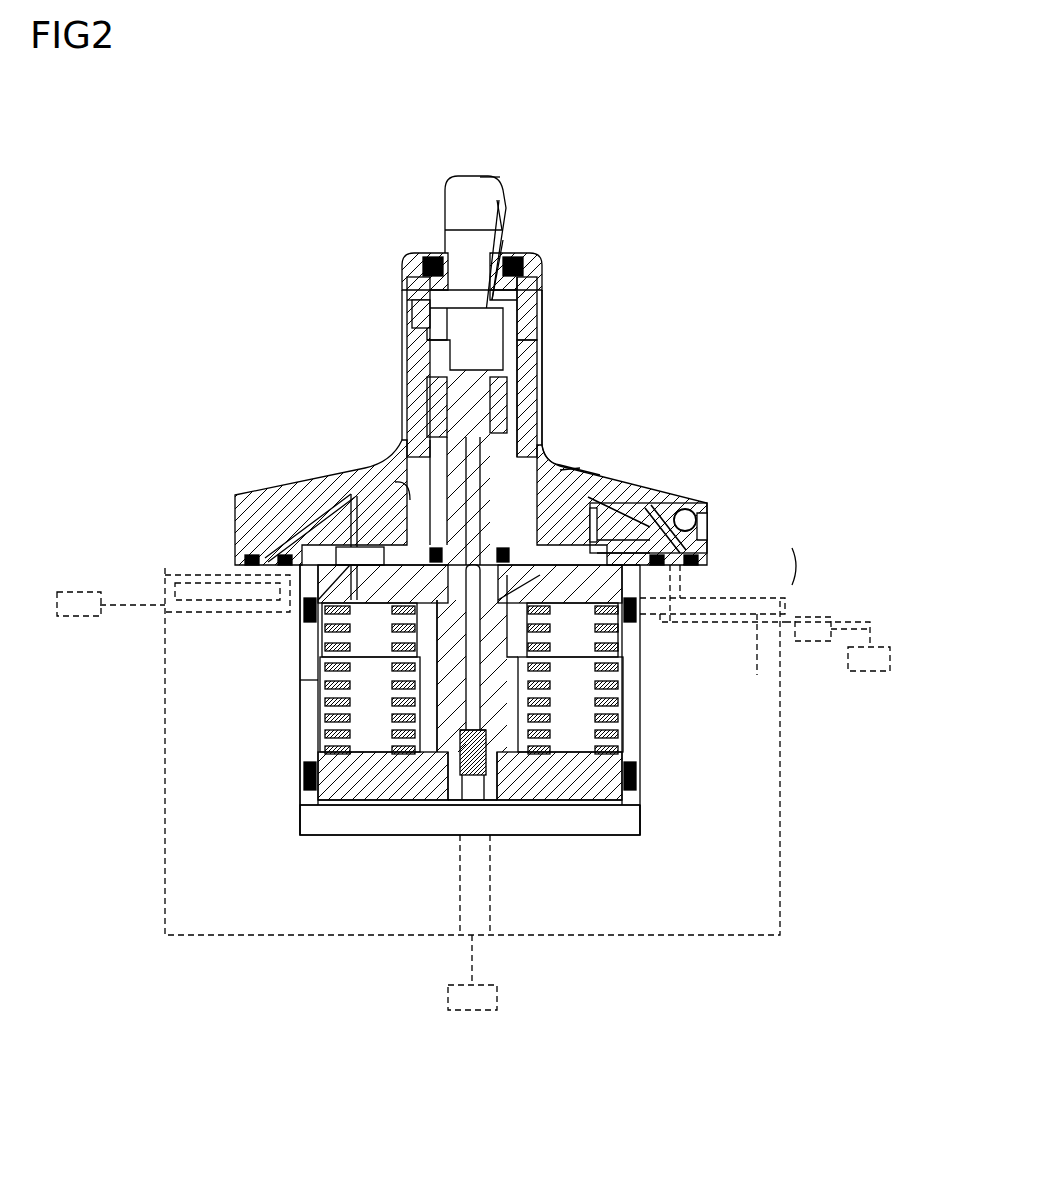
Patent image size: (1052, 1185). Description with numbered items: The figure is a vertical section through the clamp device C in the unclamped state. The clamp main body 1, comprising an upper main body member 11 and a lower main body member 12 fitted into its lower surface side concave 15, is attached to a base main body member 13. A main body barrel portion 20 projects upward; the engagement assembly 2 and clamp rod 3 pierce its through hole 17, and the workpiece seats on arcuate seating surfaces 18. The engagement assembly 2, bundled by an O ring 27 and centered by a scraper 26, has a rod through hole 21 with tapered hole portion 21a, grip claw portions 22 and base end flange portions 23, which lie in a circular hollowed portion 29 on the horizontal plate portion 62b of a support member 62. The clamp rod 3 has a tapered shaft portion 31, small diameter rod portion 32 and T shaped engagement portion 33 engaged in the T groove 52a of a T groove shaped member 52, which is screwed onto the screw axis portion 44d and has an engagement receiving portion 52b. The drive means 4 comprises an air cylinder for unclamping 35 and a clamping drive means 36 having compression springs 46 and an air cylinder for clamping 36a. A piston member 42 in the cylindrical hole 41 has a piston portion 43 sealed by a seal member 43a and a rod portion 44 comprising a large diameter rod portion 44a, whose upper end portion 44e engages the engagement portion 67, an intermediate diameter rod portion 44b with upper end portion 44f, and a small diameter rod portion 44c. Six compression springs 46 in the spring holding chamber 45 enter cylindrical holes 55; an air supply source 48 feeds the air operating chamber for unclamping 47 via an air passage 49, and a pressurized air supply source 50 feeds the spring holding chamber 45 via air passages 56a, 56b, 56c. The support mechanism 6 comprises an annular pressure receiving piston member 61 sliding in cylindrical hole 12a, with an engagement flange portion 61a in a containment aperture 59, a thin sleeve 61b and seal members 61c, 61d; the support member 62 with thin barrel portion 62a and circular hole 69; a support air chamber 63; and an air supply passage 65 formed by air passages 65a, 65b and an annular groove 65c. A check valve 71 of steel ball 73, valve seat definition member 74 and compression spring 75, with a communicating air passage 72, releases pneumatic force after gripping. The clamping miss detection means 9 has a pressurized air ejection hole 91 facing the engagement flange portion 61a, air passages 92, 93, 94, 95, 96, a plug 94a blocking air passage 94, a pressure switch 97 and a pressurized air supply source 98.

The clamp main body 1 is at (802, 566).
The engagement assembly 2 is at (520, 212).
The clamp rod 3 is at (492, 178).
The drive means 4 is at (325, 840).
The support mechanism 6 is at (316, 650).
The clamping miss detection means 9 is at (660, 502).
The upper main body member 11 is at (712, 556).
The lower main body member 12 is at (700, 592).
The cylindrical hole 12a is at (665, 602).
The base main body member 13 is at (782, 775).
The lower surface side concave 15 is at (265, 516).
The through hole 17 is at (545, 284).
The arcuate seating surfaces 18 is at (548, 258).
The main body barrel portion 20 is at (545, 386).
The rod through hole 21 is at (525, 268).
The tapered hole portion 21a is at (508, 195).
The grip claw portions 22 is at (505, 243).
The base end flange portions 23 is at (535, 306).
The scraper 26 is at (440, 250).
The O ring 27 is at (425, 258).
The circular hollowed portion 29 is at (413, 282).
The tapered shaft portion 31 is at (444, 186).
The small diameter rod portion 32 is at (473, 275).
The T shaped engagement portion 33 is at (465, 339).
The air cylinder for unclamping 35 is at (645, 826).
The clamping drive means 36 is at (280, 758).
The air cylinder for clamping 36a is at (310, 687).
The cylindrical hole 41 is at (626, 724).
The piston member 42 is at (310, 826).
The piston portion 43 is at (315, 800).
The seal member 43a is at (640, 782).
The rod portion 44 is at (624, 664).
The large diameter rod portion 44a is at (622, 746).
The intermediate diameter rod portion 44b is at (612, 646).
The small diameter rod portion 44c is at (548, 463).
The screw axis portion 44d is at (510, 432).
The upper end portion 44e is at (606, 700).
The upper end portion 44f is at (556, 600).
The spring holding chamber 45 is at (310, 732).
The compression springs 46 is at (320, 712).
The air operating chamber for unclamping 47 is at (392, 836).
The air supply source 48 is at (498, 998).
The air passage 49 is at (492, 882).
The pressurized air supply source 50 is at (76, 616).
The T groove shaped member 52 is at (537, 406).
The T groove 52a is at (542, 346).
The engagement receiving portion 52b is at (410, 442).
The cylindrical holes 55 is at (640, 618).
The air passage 56a is at (285, 590).
The air passage 56b is at (240, 542).
The air passage 56c is at (172, 645).
The containment aperture 59 is at (642, 500).
The annular pressure receiving piston member 61 is at (316, 630).
The engagement flange portion 61a is at (325, 491).
The thin sleeve 61b is at (395, 482).
The seal member 61c is at (482, 506).
The seal member 61d is at (548, 532).
The support member 62 is at (412, 358).
The thin barrel portion 62a is at (430, 390).
The horizontal plate portion 62b is at (420, 302).
The support air chamber 63 is at (378, 606).
The air supply passage 65 is at (436, 752).
The vertically oriented air passage 65a is at (466, 727).
The horizontally oriented air passage 65b is at (465, 690).
The annular groove 65c is at (476, 462).
The engagement portion 67 is at (396, 662).
The circular hole 69 is at (425, 326).
The check valve 71 is at (462, 812).
The communicating air passage 72 is at (352, 480).
The steel ball 73 is at (460, 770).
The valve seat definition member 74 is at (496, 806).
The compression spring 75 is at (487, 732).
The pressurized air ejection hole 91 is at (566, 470).
The air passage 92 is at (600, 548).
The air passage 93 is at (588, 530).
The air passage 94 is at (700, 508).
The plug 94a is at (710, 518).
The air passage 95 is at (697, 522).
The air passage 96 is at (758, 660).
The pressure switch 97 is at (812, 642).
The pressurized air supply source 98 is at (870, 672).
The clamp device C is at (650, 140).